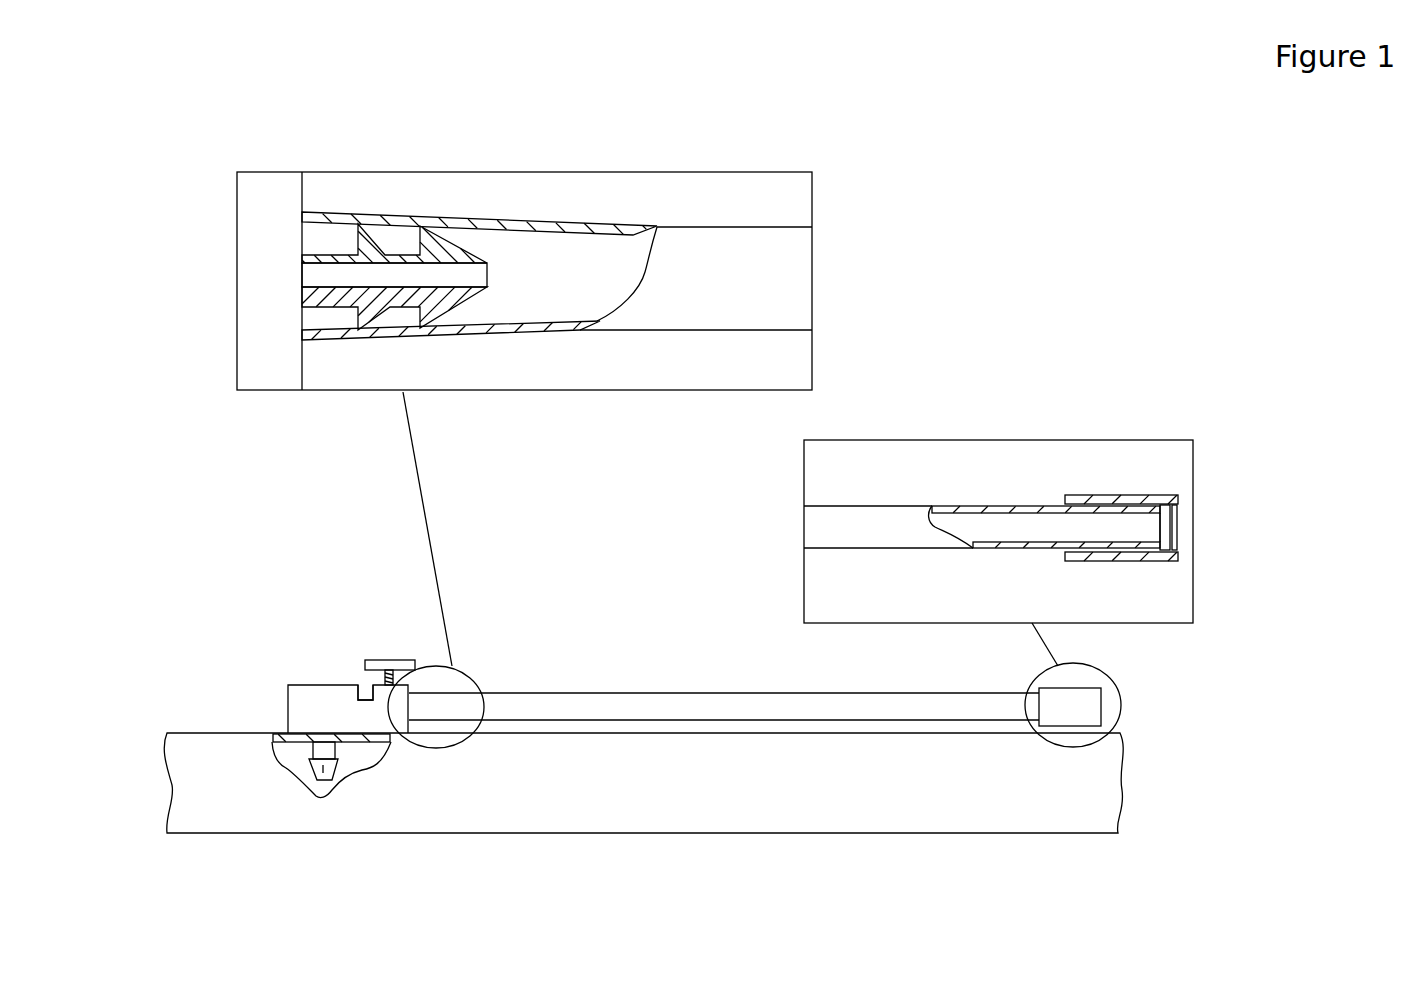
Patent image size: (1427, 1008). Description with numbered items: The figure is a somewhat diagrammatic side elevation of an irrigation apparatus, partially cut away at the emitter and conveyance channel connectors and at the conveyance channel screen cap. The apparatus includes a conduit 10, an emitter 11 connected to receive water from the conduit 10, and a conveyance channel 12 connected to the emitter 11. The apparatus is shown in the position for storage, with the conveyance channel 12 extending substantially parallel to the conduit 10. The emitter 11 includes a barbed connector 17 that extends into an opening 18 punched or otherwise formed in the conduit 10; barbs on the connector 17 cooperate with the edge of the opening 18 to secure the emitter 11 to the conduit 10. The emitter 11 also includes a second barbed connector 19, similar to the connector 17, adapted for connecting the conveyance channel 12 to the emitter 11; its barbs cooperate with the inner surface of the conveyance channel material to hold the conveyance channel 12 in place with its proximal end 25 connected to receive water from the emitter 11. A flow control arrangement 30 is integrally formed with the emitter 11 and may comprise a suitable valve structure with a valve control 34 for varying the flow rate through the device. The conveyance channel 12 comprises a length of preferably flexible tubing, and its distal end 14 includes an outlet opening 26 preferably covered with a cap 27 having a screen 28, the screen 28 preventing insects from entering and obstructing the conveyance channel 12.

The conduit 10 is at (880, 790).
The emitter 11 is at (310, 712).
The conveyance channel 12 is at (738, 692).
The distal end 14 is at (1002, 487).
The barbed connector 17 is at (323, 772).
The opening 18 is at (307, 742).
The second barbed connector 19 is at (477, 258).
The proximal end 25 is at (757, 215).
The outlet opening 26 is at (1127, 524).
The cap 27 is at (1133, 557).
The screen 28 is at (1180, 541).
The flow control arrangement 30 is at (382, 700).
The valve control 34 is at (383, 662).